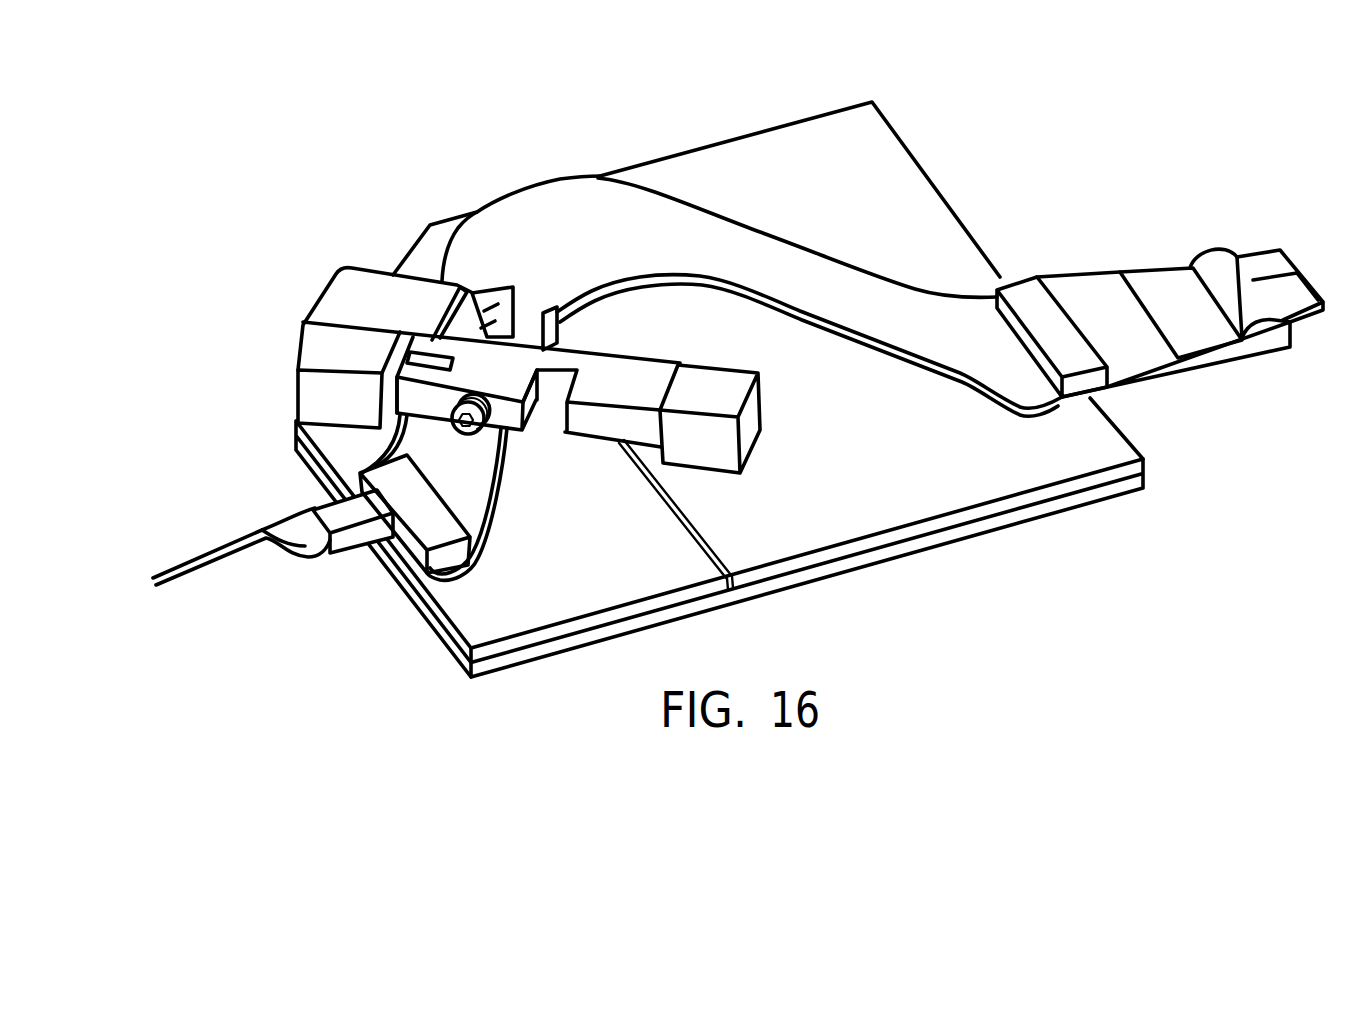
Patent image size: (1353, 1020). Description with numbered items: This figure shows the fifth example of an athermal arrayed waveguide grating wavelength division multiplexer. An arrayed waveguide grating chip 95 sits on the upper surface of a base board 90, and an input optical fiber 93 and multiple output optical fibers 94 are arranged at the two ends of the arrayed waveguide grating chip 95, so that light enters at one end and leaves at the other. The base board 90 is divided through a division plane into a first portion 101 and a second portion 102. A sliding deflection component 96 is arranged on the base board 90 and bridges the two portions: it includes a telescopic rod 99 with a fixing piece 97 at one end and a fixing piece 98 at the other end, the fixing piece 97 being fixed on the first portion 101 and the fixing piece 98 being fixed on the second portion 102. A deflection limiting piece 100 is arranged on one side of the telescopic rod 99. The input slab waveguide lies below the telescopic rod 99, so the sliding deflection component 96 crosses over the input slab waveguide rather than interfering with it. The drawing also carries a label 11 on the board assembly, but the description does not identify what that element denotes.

The base plate 11 is at (893, 553).
The base board 90 is at (863, 180).
The input optical fiber 93 is at (273, 567).
The output optical fibers 94 is at (1173, 300).
The arrayed waveguide grating chip 95 is at (477, 183).
The sliding deflection component 96 is at (812, 420).
The fixing piece 97 is at (323, 393).
The fixing piece 98 is at (713, 440).
The telescopic rod 99 is at (588, 363).
The deflection limiting piece 100 is at (508, 415).
The first portion 101 is at (483, 620).
The second portion 102 is at (1007, 463).